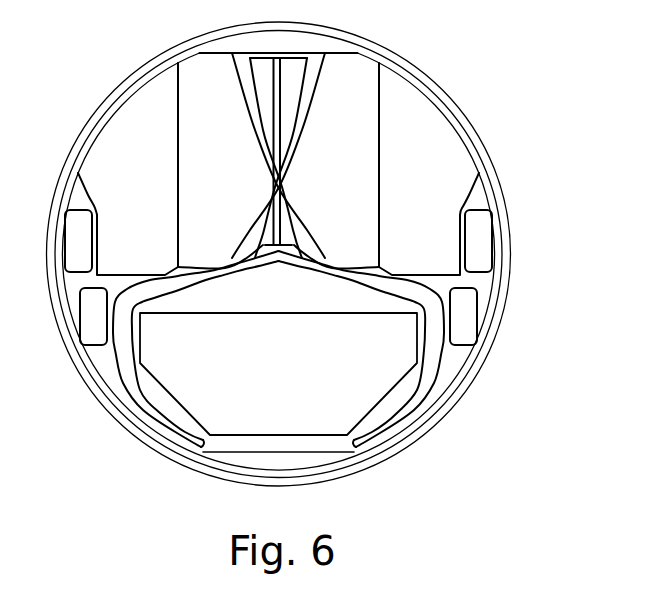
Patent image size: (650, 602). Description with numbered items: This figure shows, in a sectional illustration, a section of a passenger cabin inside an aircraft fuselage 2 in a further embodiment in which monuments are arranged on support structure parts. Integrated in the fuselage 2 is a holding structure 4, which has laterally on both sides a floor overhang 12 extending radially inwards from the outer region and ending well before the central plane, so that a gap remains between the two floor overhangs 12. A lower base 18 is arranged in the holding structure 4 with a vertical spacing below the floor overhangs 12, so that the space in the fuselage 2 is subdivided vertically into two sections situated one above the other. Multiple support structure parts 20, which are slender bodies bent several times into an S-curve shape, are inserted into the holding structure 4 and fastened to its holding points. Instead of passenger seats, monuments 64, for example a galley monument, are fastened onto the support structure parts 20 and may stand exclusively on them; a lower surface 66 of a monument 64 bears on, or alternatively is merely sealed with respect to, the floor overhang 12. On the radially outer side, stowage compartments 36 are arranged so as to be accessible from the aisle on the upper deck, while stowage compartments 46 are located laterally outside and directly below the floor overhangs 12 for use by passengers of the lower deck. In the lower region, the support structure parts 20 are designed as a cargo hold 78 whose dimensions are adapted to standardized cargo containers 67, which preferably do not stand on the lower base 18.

The aircraft fuselage 2 is at (506, 100).
The holding structure 4 is at (483, 142).
The floor overhang 12 is at (145, 260).
The lower base 18 is at (280, 468).
The support structure part 20 is at (353, 263).
The stowage compartment 36 is at (478, 236).
The stowage compartment 46 is at (470, 332).
The monument 64 is at (345, 120).
The lower surface 66 is at (192, 259).
The cargo container 67 is at (418, 352).
The cargo hold 78 is at (240, 287).